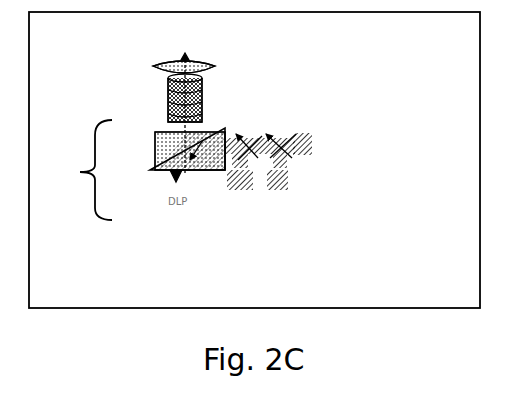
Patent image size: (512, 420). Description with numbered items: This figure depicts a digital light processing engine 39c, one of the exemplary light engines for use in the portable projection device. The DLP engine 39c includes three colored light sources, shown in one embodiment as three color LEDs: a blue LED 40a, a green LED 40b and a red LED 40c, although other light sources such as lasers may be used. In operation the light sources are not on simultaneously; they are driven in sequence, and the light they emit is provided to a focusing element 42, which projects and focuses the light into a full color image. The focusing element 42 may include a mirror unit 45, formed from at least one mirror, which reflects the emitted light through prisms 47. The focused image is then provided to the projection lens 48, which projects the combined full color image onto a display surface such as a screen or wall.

The digital light processing (DLP) engine 39c is at (203, 295).
The focusing element 42 is at (73, 187).
The mirror unit 45 is at (170, 173).
The prisms 47 is at (149, 166).
The projection lens 48 is at (213, 87).
The blue LED 40a is at (256, 242).
The green LED 40b is at (300, 242).
The red LED 40c is at (341, 109).